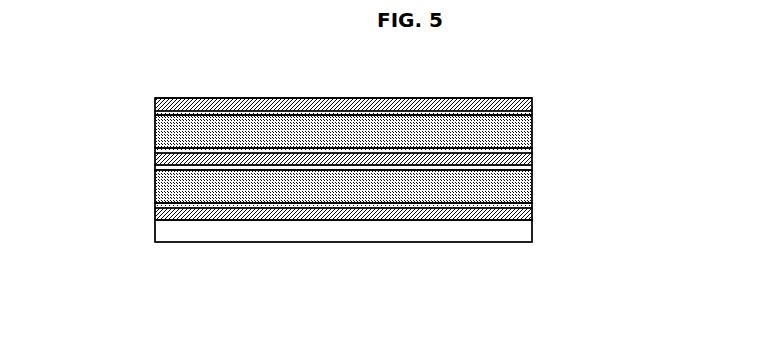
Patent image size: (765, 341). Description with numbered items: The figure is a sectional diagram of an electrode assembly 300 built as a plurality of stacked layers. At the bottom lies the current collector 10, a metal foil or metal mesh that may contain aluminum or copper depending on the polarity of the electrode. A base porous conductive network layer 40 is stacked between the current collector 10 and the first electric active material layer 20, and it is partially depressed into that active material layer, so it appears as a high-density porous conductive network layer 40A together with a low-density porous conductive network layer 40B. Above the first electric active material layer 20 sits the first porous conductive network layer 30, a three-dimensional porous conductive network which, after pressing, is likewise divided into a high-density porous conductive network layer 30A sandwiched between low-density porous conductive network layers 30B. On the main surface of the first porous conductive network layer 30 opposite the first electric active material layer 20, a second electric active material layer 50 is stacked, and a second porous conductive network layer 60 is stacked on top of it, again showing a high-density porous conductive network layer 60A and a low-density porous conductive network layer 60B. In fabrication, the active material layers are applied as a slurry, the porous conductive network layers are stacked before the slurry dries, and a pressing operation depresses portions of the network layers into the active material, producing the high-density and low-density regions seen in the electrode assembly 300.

The electrode assembly 300 is at (437, 85).
The current collector 10 is at (532, 232).
The first electric active material layer 20 is at (532, 187).
The first porous conductive network layer 30 is at (76, 135).
The high-density porous conductive network layer 30A is at (155, 159).
The low-density porous conductive network layer 30B is at (155, 150).
The base porous conductive network layer 40 is at (621, 205).
The high-density porous conductive network layer 40A is at (532, 214).
The low-density porous conductive network layer 40B is at (532, 206).
The second electric active material layer 50 is at (532, 131).
The second porous conductive network layer 60 is at (621, 86).
The high-density porous conductive network layer 60A is at (532, 104).
The low-density porous conductive network layer 60B is at (532, 113).